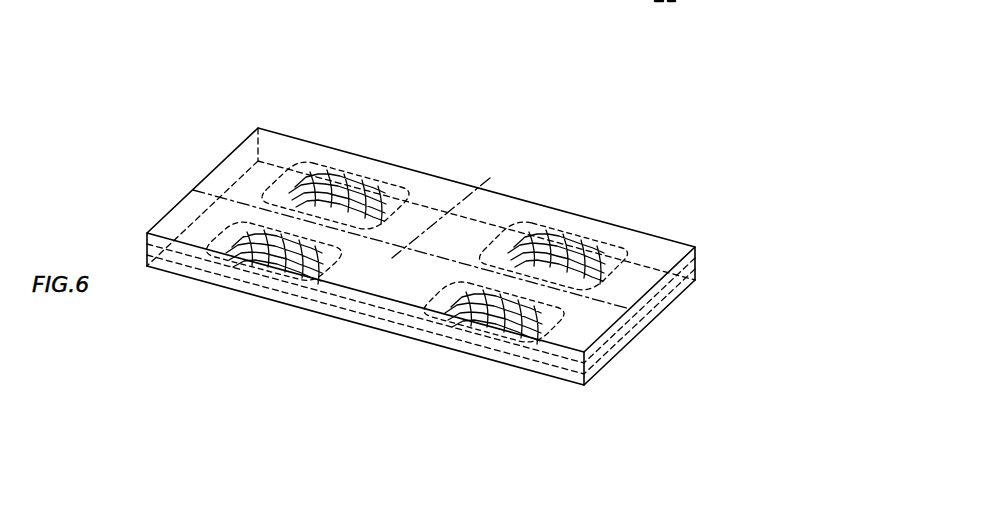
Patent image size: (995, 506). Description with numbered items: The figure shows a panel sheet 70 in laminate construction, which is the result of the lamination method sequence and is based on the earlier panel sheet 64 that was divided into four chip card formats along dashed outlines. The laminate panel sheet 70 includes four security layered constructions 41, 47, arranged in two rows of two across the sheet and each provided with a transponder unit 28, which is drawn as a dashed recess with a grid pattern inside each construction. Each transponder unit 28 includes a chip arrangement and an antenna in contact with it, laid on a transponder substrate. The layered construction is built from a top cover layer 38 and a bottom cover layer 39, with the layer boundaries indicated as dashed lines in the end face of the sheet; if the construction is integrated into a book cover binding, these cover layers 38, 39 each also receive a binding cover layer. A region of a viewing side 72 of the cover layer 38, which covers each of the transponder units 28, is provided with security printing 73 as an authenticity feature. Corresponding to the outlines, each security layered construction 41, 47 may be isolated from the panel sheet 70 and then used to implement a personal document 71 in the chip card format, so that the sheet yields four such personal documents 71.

The transponder unit 28 is at (290, 160).
The cover layer 38 is at (698, 249).
The cover layer 39 is at (699, 277).
The security layered construction 41 is at (406, 245).
The security layered construction 47 is at (358, 160).
The panel sheet 64 is at (702, 262).
The panel sheet 70 is at (606, 208).
The personal document 71 is at (438, 168).
The viewing side 72 is at (312, 147).
The security printing 73 is at (530, 224).